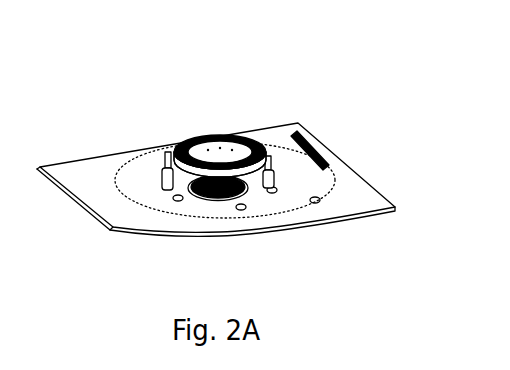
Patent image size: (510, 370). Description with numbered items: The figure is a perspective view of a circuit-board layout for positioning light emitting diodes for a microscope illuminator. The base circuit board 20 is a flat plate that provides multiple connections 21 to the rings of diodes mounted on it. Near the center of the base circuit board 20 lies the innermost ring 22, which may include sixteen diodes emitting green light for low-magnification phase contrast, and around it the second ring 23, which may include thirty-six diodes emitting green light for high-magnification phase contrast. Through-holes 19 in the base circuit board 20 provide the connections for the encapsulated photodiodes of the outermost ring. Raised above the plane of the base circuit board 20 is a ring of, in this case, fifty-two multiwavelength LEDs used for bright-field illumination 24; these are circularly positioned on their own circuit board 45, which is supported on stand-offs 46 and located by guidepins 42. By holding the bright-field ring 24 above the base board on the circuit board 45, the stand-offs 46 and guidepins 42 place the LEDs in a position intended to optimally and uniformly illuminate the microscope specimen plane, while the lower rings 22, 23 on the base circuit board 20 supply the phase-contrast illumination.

The base circuit board 20 is at (450, 62).
The connections 21 is at (306, 134).
The through-holes 19 is at (328, 170).
The innermost ring 22 is at (232, 197).
The second ring 23 is at (204, 198).
The ring of multiwavelength LEDs for bright-field illumination 24 is at (199, 137).
The guidepins 42 is at (265, 145).
The circuit board 45 is at (170, 146).
The stand-offs 46 is at (318, 197).